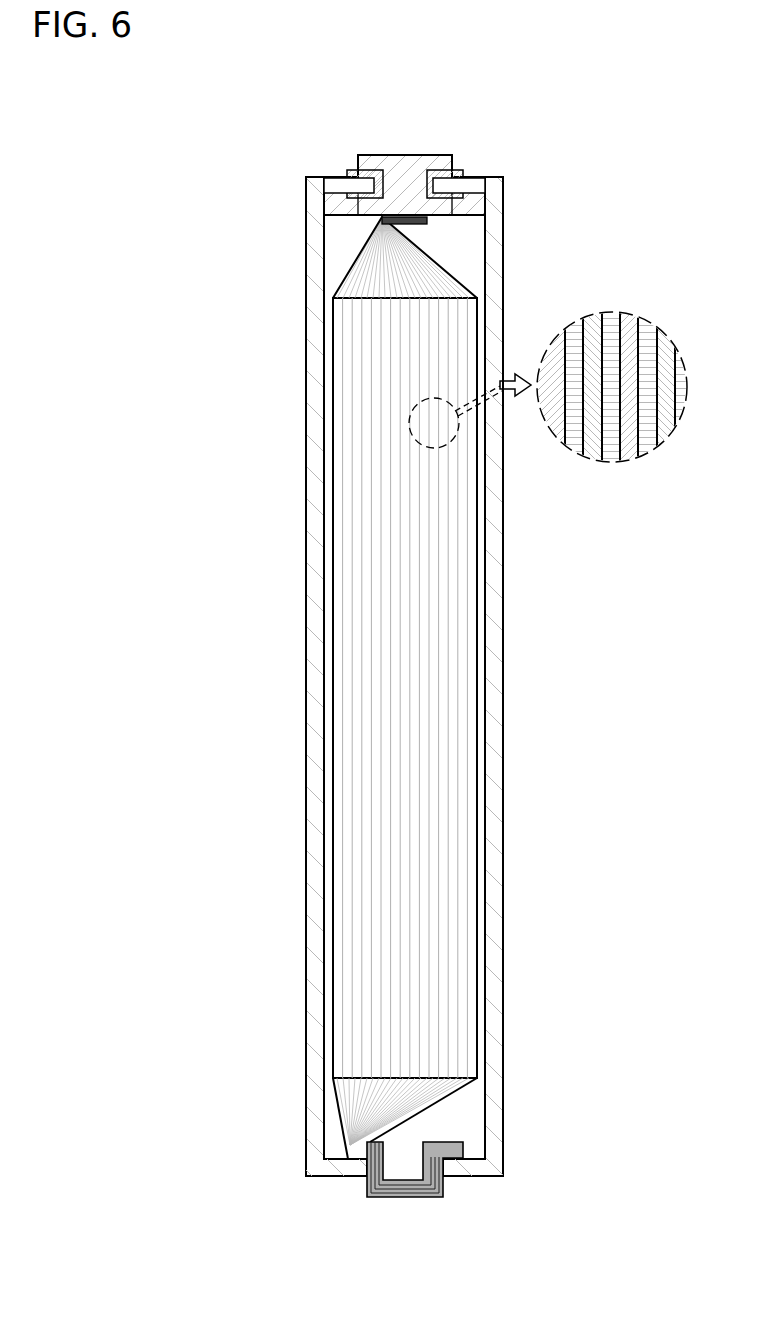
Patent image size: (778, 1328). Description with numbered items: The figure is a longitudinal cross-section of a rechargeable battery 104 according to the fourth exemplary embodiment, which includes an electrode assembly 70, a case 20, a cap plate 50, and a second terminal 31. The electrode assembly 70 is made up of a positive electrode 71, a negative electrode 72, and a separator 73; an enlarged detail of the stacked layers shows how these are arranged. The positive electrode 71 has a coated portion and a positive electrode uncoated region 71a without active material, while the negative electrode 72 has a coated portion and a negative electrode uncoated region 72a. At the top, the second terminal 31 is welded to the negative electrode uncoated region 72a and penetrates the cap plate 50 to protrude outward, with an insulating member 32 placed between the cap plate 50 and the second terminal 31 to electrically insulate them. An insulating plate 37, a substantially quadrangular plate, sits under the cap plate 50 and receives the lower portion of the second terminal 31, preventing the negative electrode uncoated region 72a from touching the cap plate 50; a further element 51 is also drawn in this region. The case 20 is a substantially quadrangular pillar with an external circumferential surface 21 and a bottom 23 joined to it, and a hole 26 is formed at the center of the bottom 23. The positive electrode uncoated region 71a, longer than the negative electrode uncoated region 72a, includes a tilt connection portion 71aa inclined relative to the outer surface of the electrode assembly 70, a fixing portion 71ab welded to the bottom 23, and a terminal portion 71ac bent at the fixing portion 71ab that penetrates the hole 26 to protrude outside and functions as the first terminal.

The rechargeable battery 104 is at (297, 84).
The case 20 is at (521, 739).
The external circumferential surface 21 is at (493, 825).
The bottom 23 is at (330, 1168).
The hole 26 is at (377, 1167).
The second terminal 31 is at (393, 163).
The insulating member 32 is at (349, 170).
The insulating plate 37 is at (480, 203).
The cap plate 50 is at (477, 175).
The insulating member 51 is at (413, 173).
The electrode assembly 70 is at (465, 622).
The positive electrode 71 is at (563, 443).
The negative electrode 72 is at (595, 452).
The separator 73 is at (647, 443).
The negative electrode uncoated region 72a is at (427, 262).
The positive electrode uncoated region 71a is at (478, 1091).
The tilt connection portion 71aa is at (343, 1120).
The fixing portion 71ab is at (457, 1150).
The terminal portion 71ac is at (423, 1192).